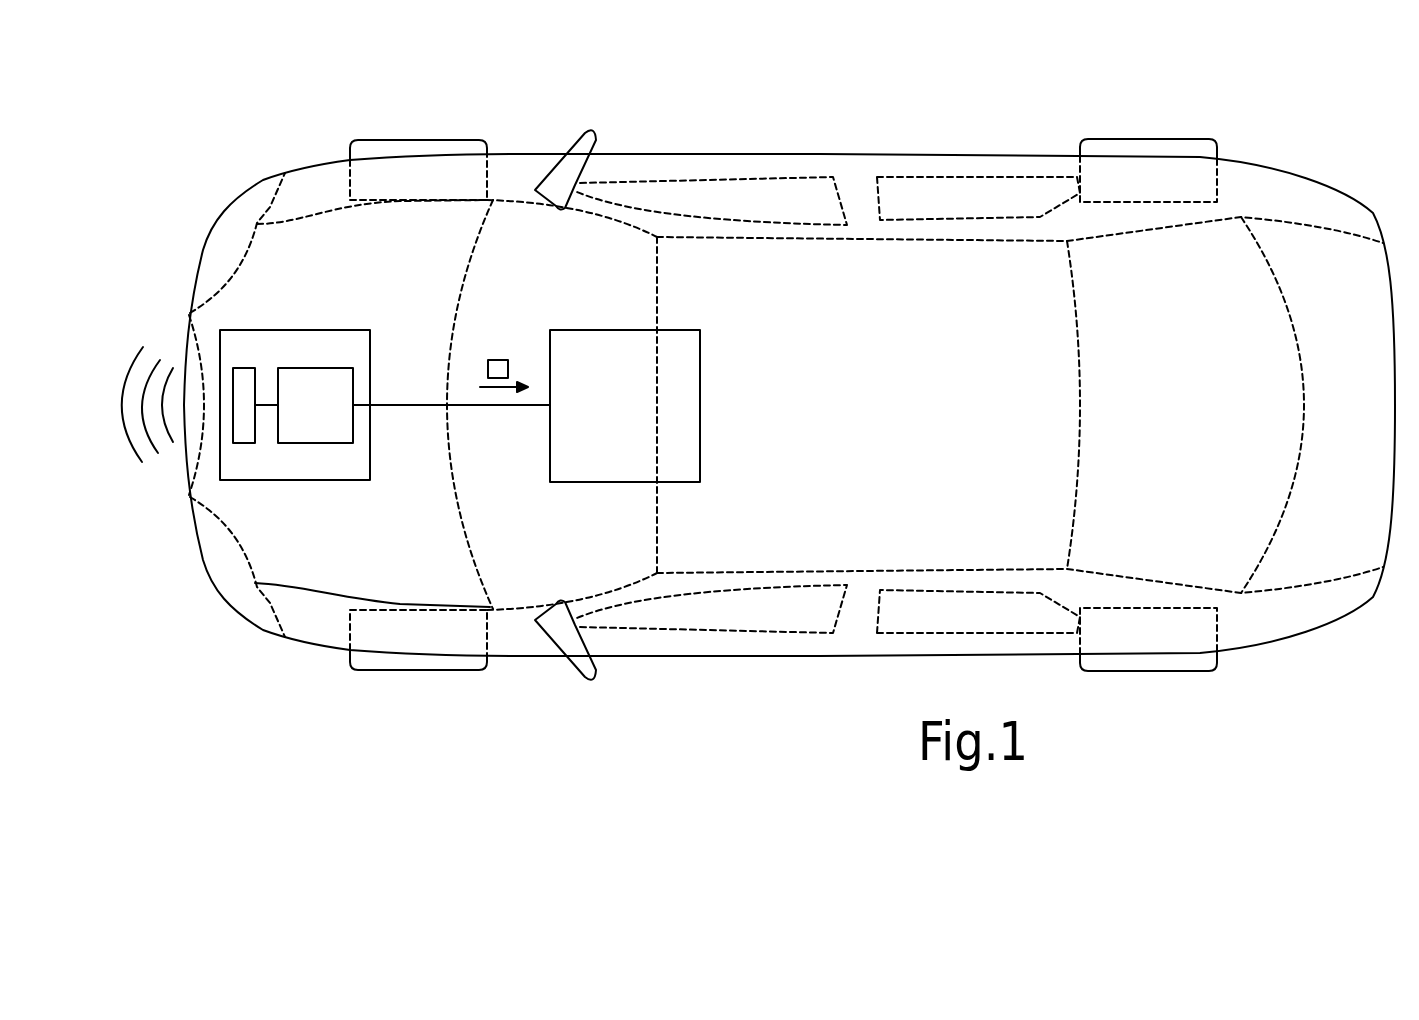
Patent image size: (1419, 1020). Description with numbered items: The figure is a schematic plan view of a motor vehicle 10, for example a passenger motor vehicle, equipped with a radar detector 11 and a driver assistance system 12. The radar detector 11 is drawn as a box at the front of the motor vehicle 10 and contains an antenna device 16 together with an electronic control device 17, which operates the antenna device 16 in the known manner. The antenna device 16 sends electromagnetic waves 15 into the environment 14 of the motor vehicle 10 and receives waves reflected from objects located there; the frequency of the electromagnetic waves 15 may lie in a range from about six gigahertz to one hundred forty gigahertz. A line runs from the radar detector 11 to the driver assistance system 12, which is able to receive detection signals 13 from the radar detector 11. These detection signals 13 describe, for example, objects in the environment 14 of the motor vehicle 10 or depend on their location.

The motor vehicle 10 is at (818, 154).
The radar detector 11 is at (334, 330).
The driver assistance system 12 is at (597, 330).
The detection signals 13 is at (498, 360).
The environment 14 is at (160, 298).
The electromagnetic waves 15 is at (136, 476).
The antenna device 16 is at (243, 368).
The electronic control device 17 is at (312, 443).